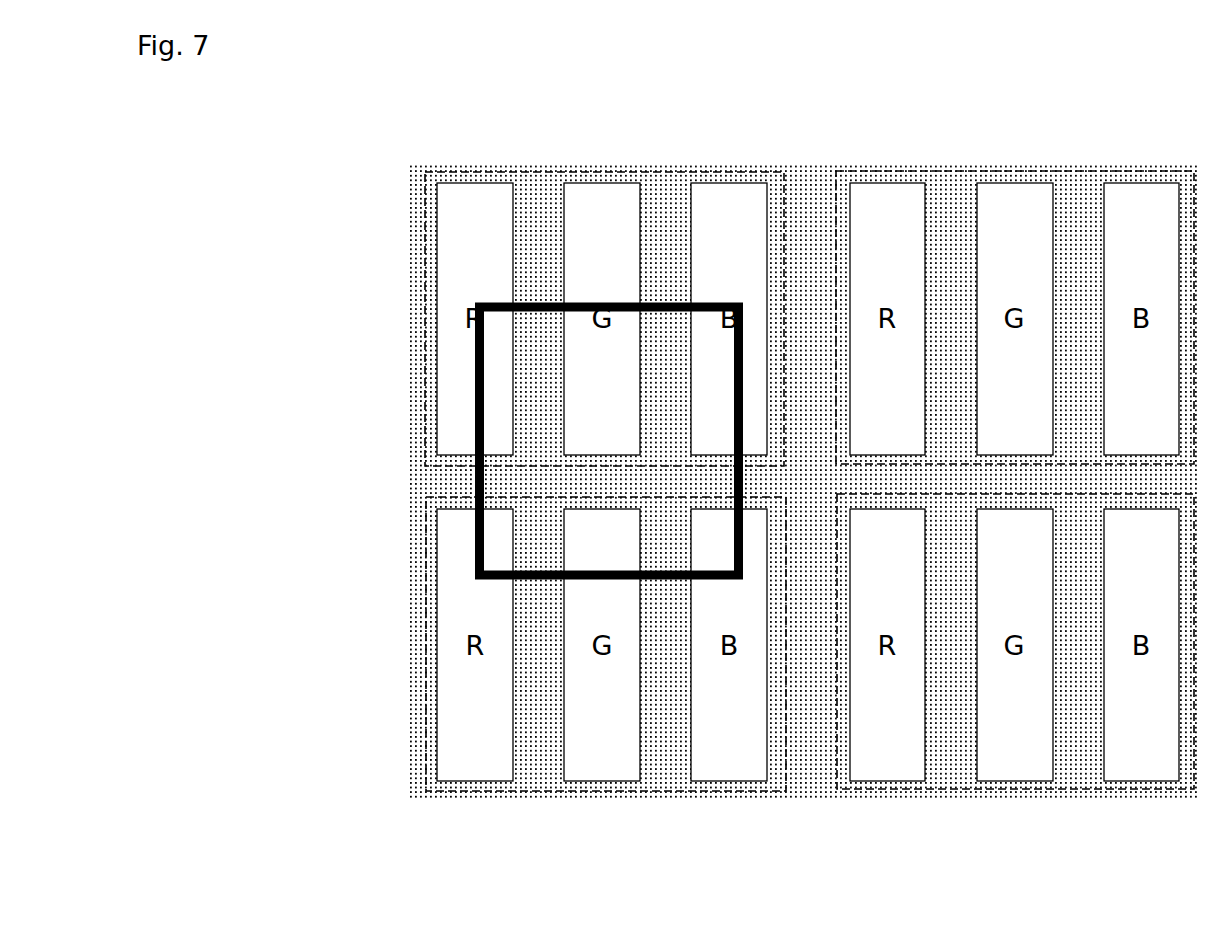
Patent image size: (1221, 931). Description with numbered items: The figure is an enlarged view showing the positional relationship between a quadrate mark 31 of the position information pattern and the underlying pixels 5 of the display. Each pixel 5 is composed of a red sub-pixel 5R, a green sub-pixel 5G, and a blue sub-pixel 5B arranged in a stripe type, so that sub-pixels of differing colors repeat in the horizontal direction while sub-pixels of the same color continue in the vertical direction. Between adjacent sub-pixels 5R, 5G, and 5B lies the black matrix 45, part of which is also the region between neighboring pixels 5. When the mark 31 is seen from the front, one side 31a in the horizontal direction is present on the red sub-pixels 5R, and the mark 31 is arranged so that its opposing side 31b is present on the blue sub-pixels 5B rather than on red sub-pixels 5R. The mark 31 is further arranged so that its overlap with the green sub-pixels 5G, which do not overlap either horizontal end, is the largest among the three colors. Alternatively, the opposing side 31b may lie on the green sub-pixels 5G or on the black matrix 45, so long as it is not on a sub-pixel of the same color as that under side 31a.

The pixel 5 is at (587, 234).
The red sub-pixel 5R is at (467, 185).
The green sub-pixel 5G is at (600, 190).
The blue sub-pixel 5B is at (721, 264).
The mark 31 is at (477, 542).
The side 31a is at (477, 477).
The opposing side 31b is at (743, 527).
The black matrix 45 is at (668, 757).